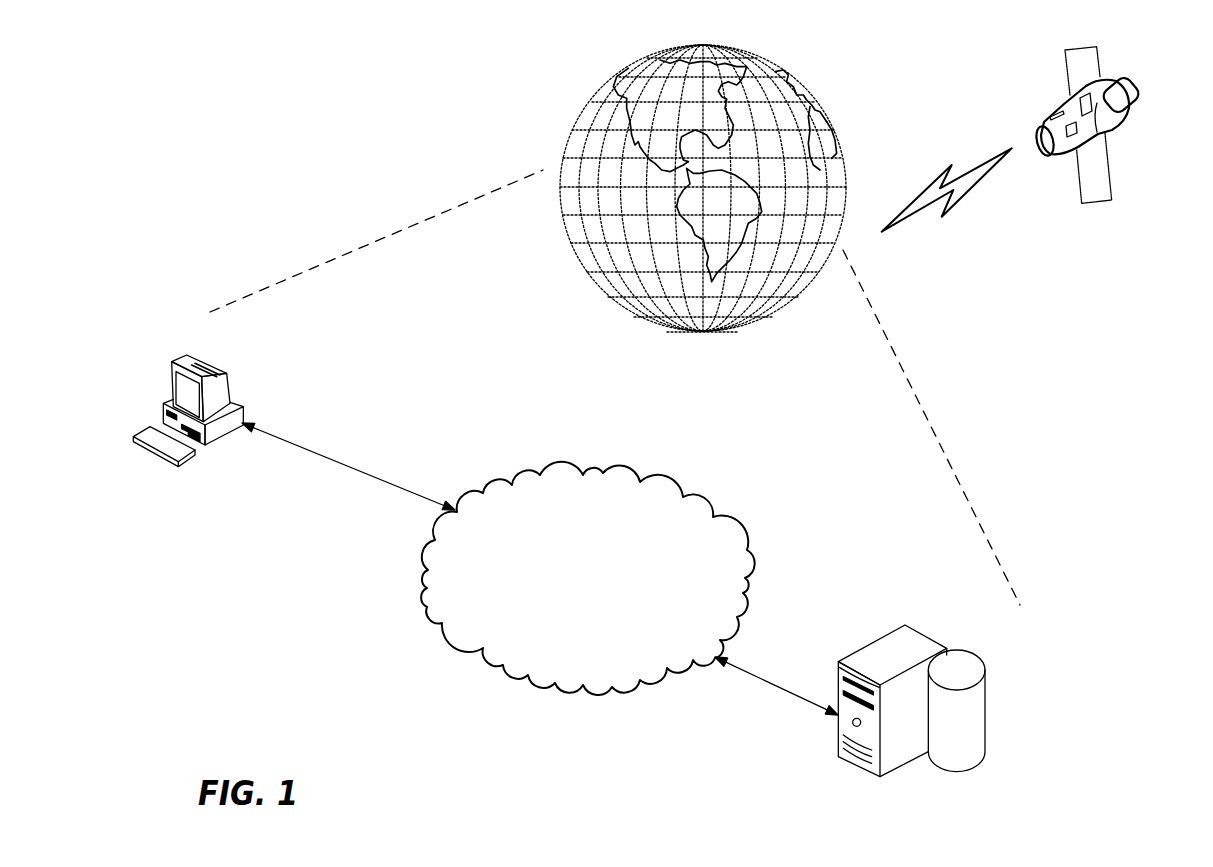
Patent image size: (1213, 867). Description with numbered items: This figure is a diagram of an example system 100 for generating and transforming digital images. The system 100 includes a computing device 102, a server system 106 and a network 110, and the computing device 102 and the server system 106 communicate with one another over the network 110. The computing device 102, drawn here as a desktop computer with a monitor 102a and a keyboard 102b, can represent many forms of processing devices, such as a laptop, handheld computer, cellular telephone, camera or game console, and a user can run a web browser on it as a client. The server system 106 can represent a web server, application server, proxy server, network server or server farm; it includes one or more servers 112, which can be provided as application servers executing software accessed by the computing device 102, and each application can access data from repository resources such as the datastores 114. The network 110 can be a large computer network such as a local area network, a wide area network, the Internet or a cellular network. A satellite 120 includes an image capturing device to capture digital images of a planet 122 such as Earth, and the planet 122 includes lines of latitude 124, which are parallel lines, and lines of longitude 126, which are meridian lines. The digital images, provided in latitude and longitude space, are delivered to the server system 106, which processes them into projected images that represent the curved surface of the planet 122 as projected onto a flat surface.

The system 100 is at (352, 151).
The computing device 102 is at (264, 421).
The monitor / display 102a is at (175, 377).
The keyboard / input device 102b is at (140, 434).
The server system 106 is at (877, 672).
The network 110 is at (533, 478).
The servers 112 is at (928, 640).
The datastores 114 is at (985, 667).
The satellite 120 is at (1132, 88).
The planet 122 is at (783, 74).
The lines of latitude 124 is at (830, 162).
The lines of longitude 126 is at (738, 198).